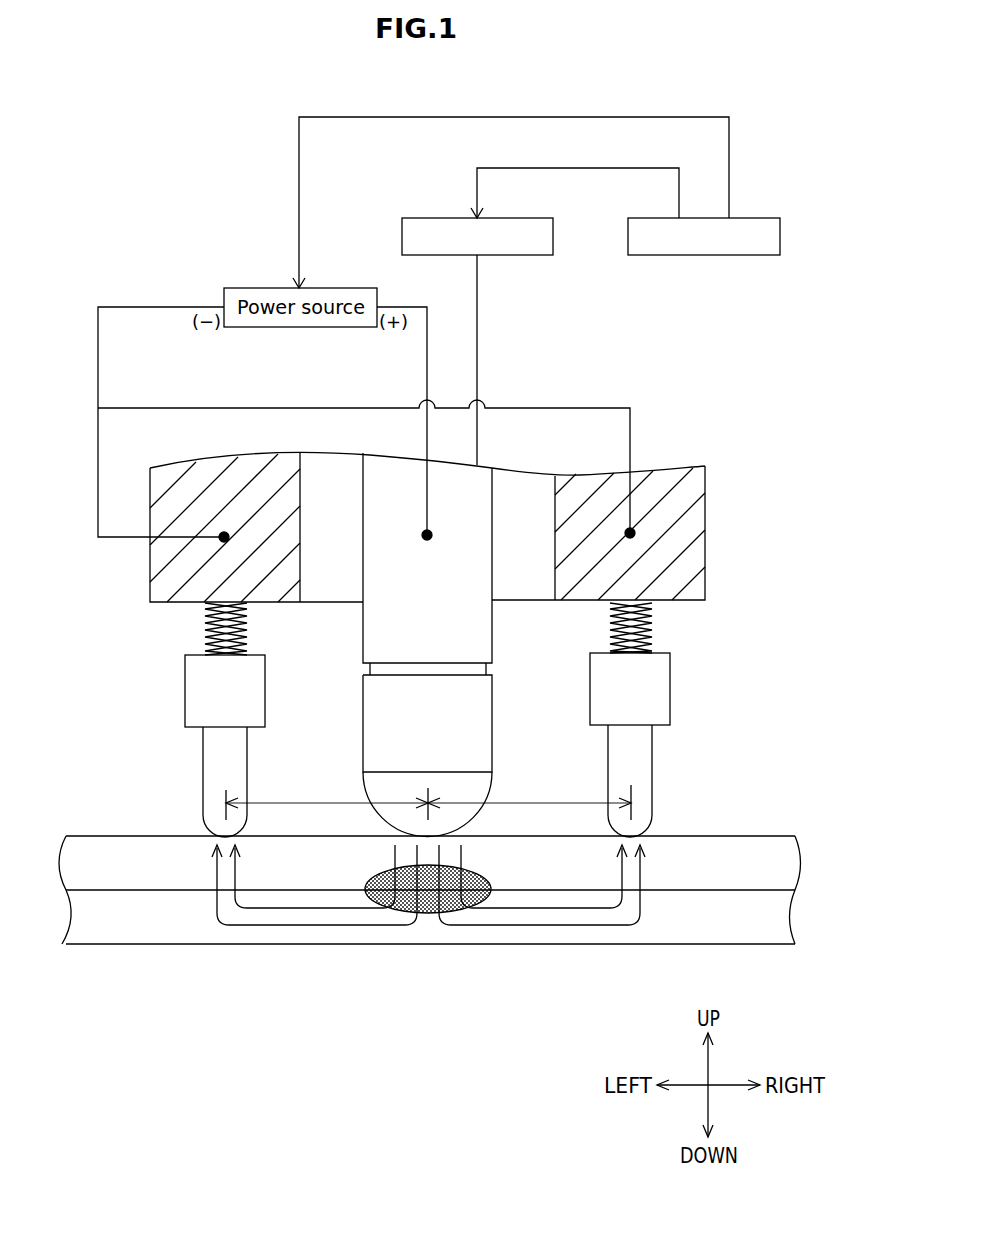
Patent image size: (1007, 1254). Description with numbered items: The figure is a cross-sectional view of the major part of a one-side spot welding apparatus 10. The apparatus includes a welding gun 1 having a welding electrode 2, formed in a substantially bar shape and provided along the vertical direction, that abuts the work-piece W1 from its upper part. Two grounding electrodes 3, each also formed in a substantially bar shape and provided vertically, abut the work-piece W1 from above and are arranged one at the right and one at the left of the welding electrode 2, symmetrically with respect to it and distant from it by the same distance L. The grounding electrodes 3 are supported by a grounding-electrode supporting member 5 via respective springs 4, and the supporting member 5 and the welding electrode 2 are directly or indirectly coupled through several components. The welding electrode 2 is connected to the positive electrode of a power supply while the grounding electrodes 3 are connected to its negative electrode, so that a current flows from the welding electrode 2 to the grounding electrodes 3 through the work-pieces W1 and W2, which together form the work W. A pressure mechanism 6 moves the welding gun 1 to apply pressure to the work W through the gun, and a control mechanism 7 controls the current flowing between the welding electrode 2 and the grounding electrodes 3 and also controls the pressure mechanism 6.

The welding gun 1 is at (468, 527).
The welding electrode 2 is at (477, 708).
The grounding electrodes 3 is at (203, 750).
The springs 4 is at (205, 620).
The grounding-electrode supporting member 5 is at (695, 550).
The pressure mechanism 6 is at (530, 217).
The control mechanism 7 is at (762, 217).
The one-side spot welding apparatus 10 is at (757, 322).
The distance L is at (428, 798).
The work W is at (430, 935).
The work-piece W1 is at (157, 870).
The work-piece W2 is at (177, 993).